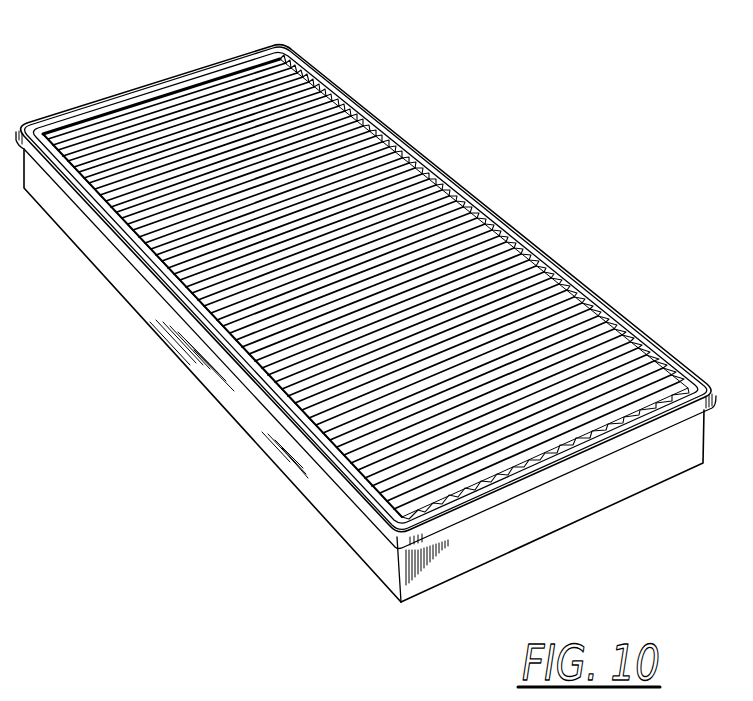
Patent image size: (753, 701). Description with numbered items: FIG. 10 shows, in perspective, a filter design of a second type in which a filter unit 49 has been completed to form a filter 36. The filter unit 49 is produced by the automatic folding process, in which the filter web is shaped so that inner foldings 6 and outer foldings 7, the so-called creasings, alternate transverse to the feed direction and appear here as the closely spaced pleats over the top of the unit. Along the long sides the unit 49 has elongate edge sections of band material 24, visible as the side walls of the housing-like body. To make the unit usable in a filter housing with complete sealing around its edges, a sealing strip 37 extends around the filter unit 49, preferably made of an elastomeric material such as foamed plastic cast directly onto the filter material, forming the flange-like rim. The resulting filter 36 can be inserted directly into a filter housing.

The filter 36 is at (67, 86).
The sealing strip 37 is at (478, 197).
The filter unit 49 is at (340, 150).
The inner foldings 6 is at (618, 378).
The band material 24 is at (288, 478).
The outer foldings 7 is at (640, 490).